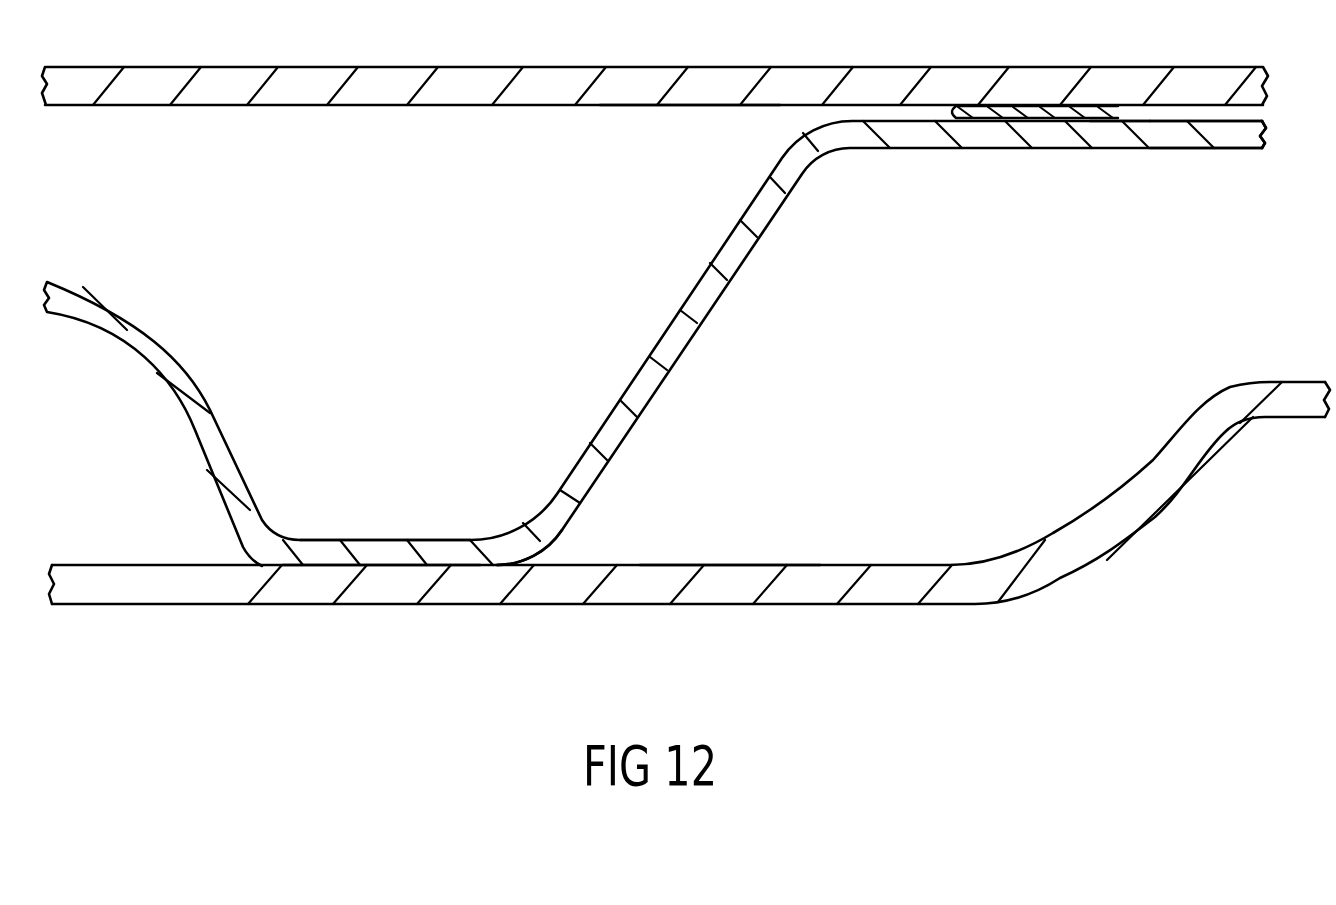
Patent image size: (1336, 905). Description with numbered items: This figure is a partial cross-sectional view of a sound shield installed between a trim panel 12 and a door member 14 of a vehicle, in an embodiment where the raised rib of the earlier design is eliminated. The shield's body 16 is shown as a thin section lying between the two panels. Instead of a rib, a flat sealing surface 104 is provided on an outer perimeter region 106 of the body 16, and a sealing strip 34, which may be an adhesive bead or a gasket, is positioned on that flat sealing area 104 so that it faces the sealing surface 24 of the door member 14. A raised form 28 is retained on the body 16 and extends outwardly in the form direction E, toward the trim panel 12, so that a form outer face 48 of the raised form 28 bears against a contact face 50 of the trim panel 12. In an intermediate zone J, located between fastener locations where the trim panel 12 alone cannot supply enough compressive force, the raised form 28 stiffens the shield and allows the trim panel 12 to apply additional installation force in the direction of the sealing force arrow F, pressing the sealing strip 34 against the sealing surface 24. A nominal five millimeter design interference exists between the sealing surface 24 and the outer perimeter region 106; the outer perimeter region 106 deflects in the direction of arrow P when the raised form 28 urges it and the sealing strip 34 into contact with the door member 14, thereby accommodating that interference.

The trim panel 12 is at (925, 606).
The door member 14 is at (447, 96).
The body 16 is at (733, 268).
The sealing surface 24 is at (687, 108).
The raised form 28 is at (585, 485).
The sealing strip 34 is at (1113, 111).
The form outer face 48 is at (336, 580).
The contact face 50 is at (727, 552).
The flat sealing surface 104 is at (1118, 128).
The outer perimeter region 106 is at (1222, 142).
The intermediate zone J is at (1262, 135).
The form direction E is at (397, 380).
The sealing force arrow F is at (879, 175).
The arrow P is at (1123, 210).